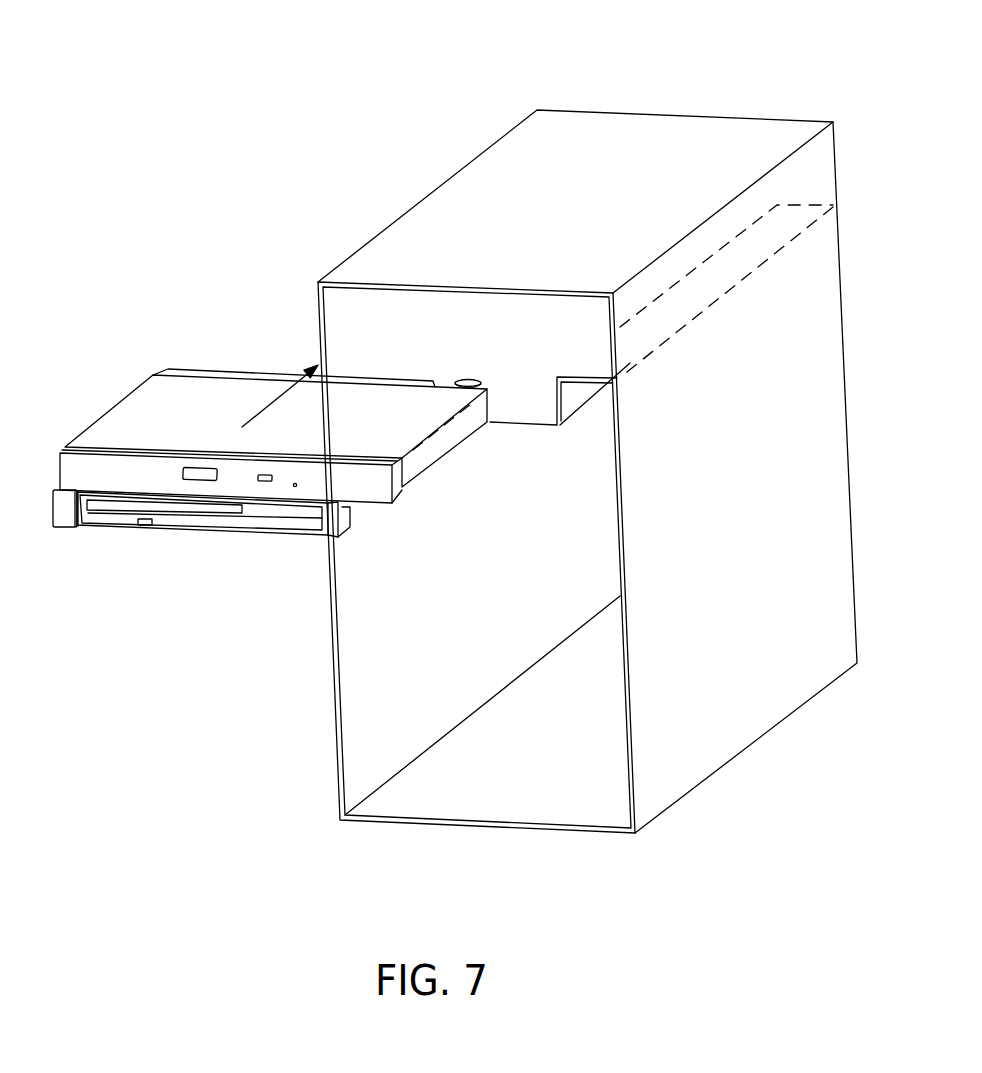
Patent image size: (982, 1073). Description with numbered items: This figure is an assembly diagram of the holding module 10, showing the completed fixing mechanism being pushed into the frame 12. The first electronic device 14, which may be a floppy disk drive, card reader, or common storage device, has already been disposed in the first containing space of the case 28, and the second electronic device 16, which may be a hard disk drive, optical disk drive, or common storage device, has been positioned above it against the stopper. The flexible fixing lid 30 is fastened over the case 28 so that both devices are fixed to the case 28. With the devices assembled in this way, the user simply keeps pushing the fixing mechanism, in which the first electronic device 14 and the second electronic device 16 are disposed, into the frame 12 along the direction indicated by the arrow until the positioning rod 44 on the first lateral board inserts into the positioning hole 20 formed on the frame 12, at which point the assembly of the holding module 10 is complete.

The holding module 10 is at (364, 105).
The frame 12 is at (737, 740).
The first electronic device 14 is at (213, 510).
The second electronic device 16 is at (365, 488).
The positioning hole 20 is at (684, 295).
The case 28 is at (63, 517).
The flexible fixing lid 30 is at (147, 415).
The positioning rod 44 is at (470, 379).